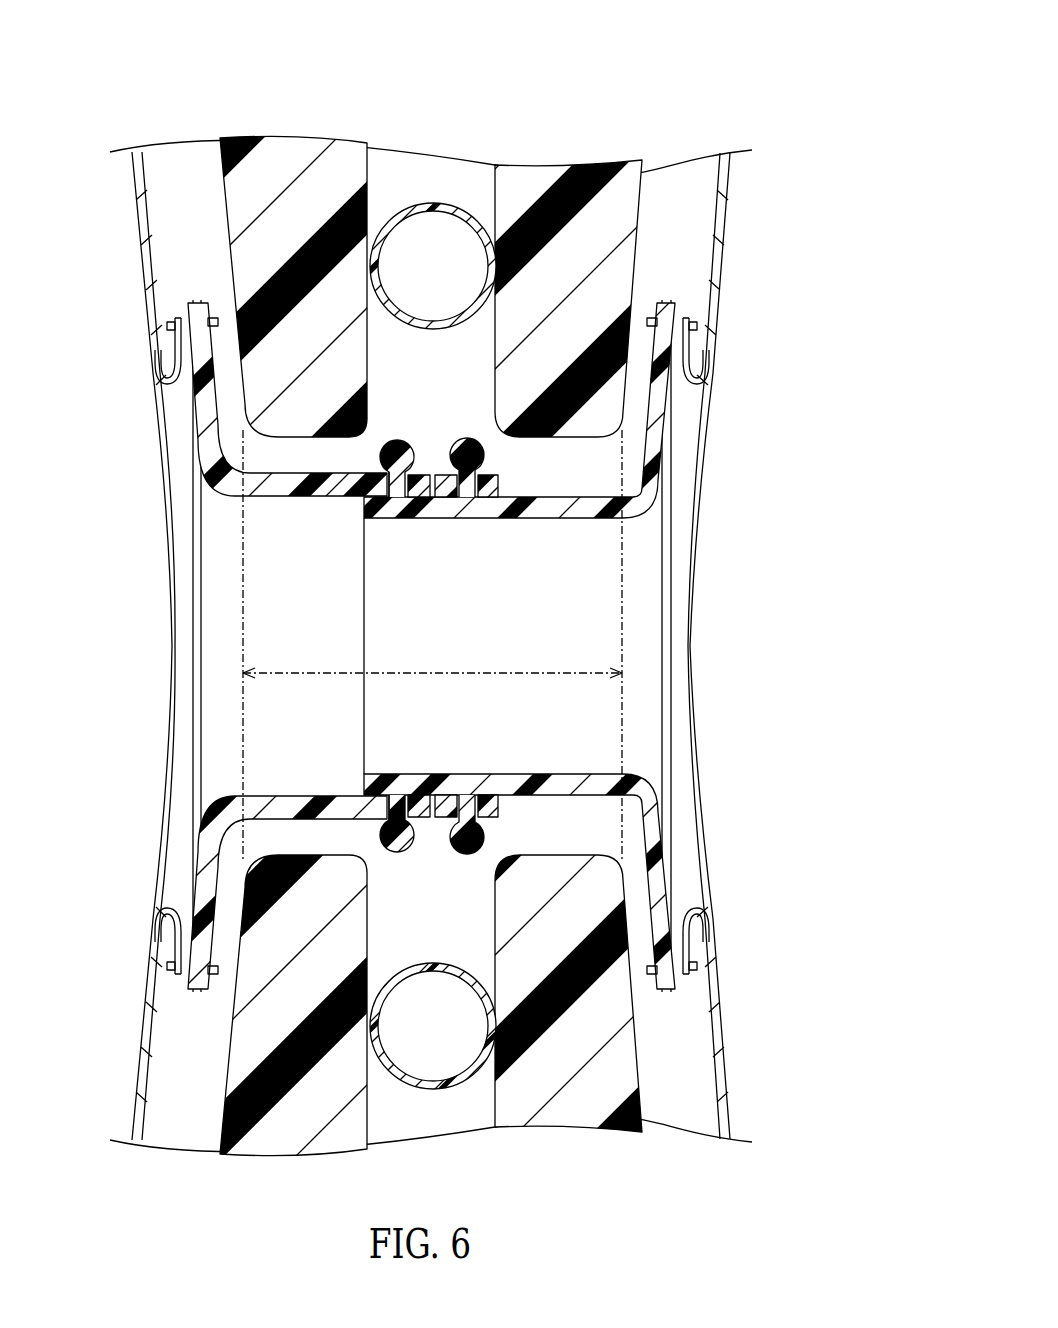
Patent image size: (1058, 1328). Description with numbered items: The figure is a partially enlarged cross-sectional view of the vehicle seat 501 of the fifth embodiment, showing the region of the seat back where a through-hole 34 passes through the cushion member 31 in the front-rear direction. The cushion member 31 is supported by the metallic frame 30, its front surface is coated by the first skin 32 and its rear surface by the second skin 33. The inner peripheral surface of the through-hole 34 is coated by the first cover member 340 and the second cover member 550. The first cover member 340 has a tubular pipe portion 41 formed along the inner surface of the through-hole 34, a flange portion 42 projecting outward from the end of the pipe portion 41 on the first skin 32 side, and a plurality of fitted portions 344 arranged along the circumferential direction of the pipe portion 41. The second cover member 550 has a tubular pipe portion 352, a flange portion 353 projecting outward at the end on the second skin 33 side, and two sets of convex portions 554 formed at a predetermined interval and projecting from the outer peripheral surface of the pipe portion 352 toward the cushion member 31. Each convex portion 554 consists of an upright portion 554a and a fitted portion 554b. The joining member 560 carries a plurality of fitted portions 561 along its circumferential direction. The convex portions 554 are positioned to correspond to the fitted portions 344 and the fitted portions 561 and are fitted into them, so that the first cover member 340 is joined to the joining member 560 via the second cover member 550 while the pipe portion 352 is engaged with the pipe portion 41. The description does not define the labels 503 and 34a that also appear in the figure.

The vehicle seat 501 is at (798, 100).
The housing assembly 503 is at (800, 283).
The frame 30 is at (424, 203).
The cushion member 31 is at (288, 156).
The first skin 32 is at (136, 247).
The second skin 33 is at (733, 206).
The through-hole 34 is at (538, 668).
The gap end face 34a is at (607, 438).
The first cover member 340 is at (148, 623).
The pipe portion 41 is at (343, 498).
The flange portion 42 is at (192, 405).
The fitted portions 344 is at (409, 519).
The pipe portion 352 is at (540, 519).
The flange portion 353 is at (658, 400).
The second cover member 550 is at (738, 630).
The convex portions 554 is at (428, 393).
The upright portion 554a is at (393, 481).
The fitted portion 554b is at (402, 442).
The joining member 560 is at (429, 646).
The fitted portions 561 is at (449, 519).